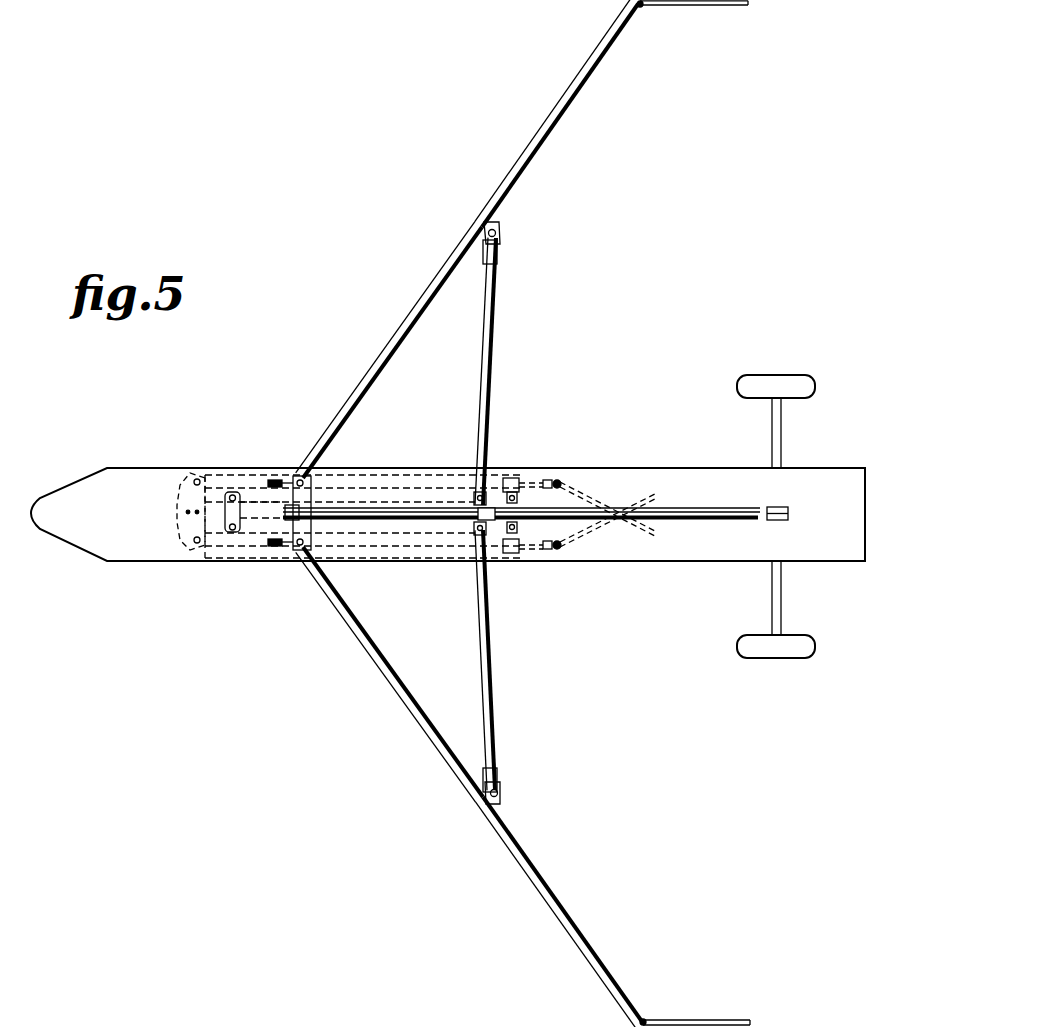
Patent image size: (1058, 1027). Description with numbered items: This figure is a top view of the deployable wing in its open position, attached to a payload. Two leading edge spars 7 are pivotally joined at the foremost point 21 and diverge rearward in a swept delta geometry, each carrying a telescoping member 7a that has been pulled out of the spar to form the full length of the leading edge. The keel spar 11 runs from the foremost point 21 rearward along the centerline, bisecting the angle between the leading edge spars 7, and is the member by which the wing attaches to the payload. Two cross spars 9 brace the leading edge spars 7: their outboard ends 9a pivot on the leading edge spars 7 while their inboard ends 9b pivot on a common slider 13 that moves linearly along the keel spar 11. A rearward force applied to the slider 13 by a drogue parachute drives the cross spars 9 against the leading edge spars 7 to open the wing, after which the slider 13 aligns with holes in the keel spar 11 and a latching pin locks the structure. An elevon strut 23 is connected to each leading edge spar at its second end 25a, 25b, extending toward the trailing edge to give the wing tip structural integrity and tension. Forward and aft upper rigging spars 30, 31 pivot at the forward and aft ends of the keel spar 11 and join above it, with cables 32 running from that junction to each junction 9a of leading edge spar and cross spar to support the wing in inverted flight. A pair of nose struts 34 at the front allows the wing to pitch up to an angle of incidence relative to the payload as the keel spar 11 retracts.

The leading edge spar 7 is at (340, 478).
The telescoping member 7a is at (524, 548).
The cross spar 9 is at (495, 695).
The outboard end of cross spar 9a is at (498, 232).
The inboard end of cross spar 9b is at (480, 478).
The keel spar 11 is at (712, 512).
The slider 13 is at (478, 508).
The foremost point 21 is at (248, 482).
The elevon strut 23 is at (655, 534).
The second end of leading edge spar 25a is at (645, 8).
The second end of leading edge spar 25b is at (645, 1020).
The forward rigging spar 30 is at (305, 550).
The aft rigging spar 31 is at (767, 521).
The cable 32 is at (484, 268).
The nose strut 34 is at (283, 480).